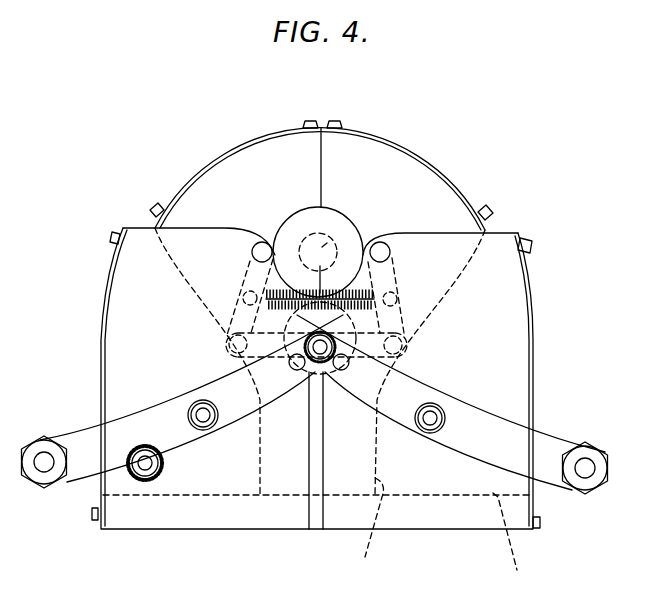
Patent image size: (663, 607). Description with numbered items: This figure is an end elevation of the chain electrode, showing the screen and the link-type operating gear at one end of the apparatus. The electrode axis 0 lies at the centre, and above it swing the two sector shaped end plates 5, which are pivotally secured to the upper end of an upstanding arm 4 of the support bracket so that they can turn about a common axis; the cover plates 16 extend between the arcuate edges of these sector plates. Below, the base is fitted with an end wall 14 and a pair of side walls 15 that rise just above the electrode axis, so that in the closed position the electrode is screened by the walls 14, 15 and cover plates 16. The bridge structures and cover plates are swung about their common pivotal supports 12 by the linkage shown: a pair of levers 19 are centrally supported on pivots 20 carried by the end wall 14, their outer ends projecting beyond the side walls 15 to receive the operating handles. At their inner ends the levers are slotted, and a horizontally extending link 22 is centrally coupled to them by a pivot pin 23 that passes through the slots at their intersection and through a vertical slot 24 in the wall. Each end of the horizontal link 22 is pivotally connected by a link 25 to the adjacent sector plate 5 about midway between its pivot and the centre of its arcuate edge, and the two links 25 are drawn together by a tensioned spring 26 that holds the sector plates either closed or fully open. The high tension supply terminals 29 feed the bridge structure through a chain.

The upstanding arm 4 is at (316, 402).
The sector shaped end plate 5 is at (263, 198).
The electrode axis 0 is at (322, 247).
The common pivotal support 12 is at (405, 318).
The end wall 14 is at (167, 346).
The side wall 15 is at (100, 308).
The cover plate 16 is at (243, 145).
The lever 19 is at (127, 440).
The pivot 20 is at (200, 413).
The horizontal link 22 is at (410, 340).
The pivot pin 23 is at (308, 372).
The vertical slot 24 is at (318, 444).
The link 25 is at (247, 265).
The tensioned spring 26 is at (318, 263).
The high tension supply terminal 29 is at (146, 482).